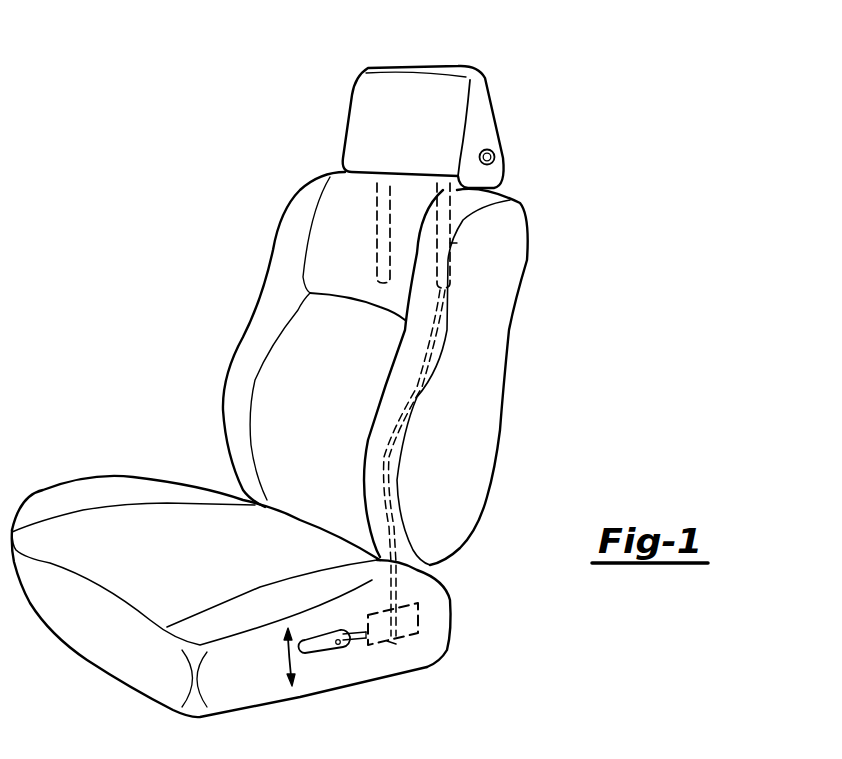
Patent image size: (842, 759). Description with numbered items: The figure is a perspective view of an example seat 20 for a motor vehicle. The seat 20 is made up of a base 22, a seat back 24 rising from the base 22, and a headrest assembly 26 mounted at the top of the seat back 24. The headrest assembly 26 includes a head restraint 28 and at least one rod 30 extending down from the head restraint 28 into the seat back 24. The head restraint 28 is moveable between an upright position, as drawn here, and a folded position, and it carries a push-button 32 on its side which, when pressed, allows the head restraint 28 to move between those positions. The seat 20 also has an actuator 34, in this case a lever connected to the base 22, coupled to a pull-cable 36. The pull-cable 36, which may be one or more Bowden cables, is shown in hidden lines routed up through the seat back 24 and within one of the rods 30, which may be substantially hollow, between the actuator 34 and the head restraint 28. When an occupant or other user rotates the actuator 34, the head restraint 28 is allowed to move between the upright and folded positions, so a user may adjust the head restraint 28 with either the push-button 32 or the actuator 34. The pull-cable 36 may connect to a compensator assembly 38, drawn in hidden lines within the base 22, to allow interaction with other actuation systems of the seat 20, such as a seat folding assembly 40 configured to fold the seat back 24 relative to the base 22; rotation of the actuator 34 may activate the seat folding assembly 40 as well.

The seat 20 is at (217, 302).
The base 22 is at (85, 497).
The seat back 24 is at (287, 247).
The headrest assembly 26 is at (341, 94).
The head restraint 28 is at (412, 92).
The rod 30 is at (377, 231).
The push-button 32 is at (495, 155).
The actuator 34 is at (322, 652).
The pull-cable 36 is at (433, 360).
The compensator assembly 38 is at (418, 620).
The seat folding assembly 40 is at (390, 642).